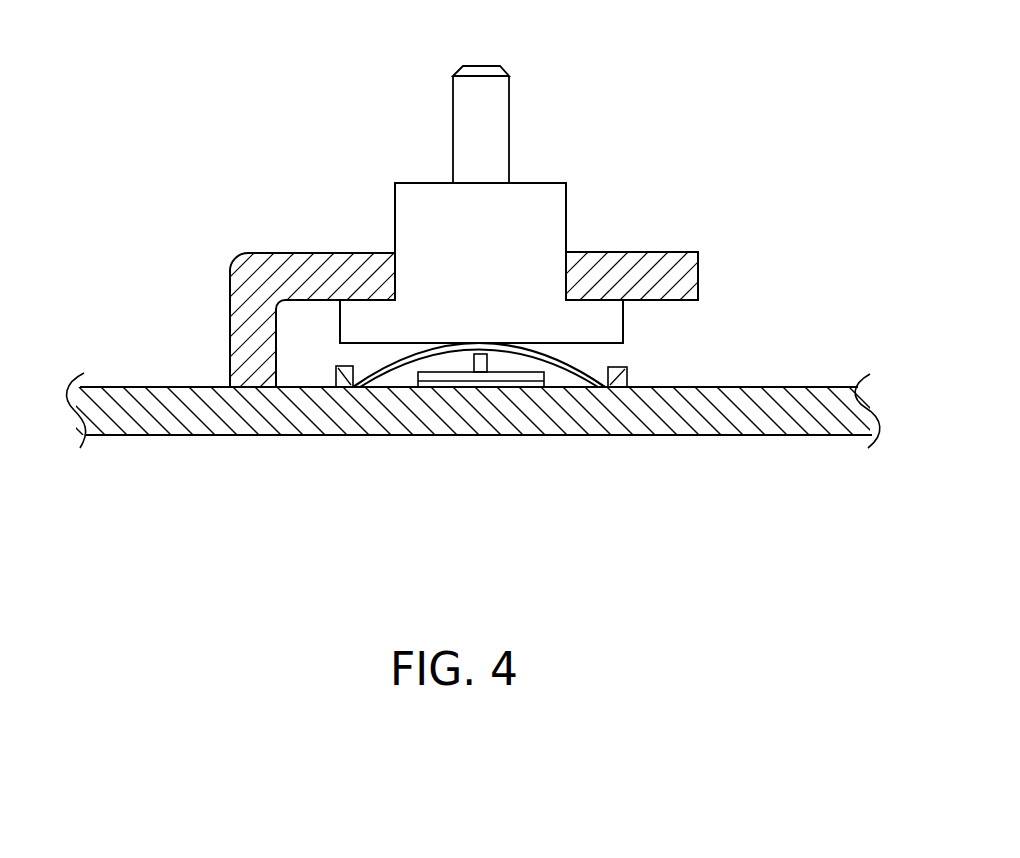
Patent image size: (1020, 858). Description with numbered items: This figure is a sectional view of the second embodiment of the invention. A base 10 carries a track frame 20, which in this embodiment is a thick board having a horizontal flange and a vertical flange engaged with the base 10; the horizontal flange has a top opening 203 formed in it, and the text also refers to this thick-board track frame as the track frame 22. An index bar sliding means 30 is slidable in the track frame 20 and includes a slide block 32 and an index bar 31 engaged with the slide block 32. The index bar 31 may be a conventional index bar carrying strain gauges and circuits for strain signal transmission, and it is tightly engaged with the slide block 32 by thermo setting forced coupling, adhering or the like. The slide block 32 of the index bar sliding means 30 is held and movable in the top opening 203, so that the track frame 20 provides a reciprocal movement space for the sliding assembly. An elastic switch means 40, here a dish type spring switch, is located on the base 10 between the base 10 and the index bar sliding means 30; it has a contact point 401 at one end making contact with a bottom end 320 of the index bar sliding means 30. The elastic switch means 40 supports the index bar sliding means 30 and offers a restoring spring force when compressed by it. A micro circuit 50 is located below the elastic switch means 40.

The base 10 is at (781, 420).
The track frame 20 is at (667, 262).
The track space 22 is at (772, 296).
The top opening 203 is at (393, 247).
The index bar sliding means 30 is at (537, 190).
The index bar 31 is at (503, 94).
The slide block 32 is at (415, 202).
The bottom end 320 is at (624, 350).
The elastic switch means 40 is at (370, 382).
The contact point 401 is at (512, 342).
The micro circuit 50 is at (473, 380).